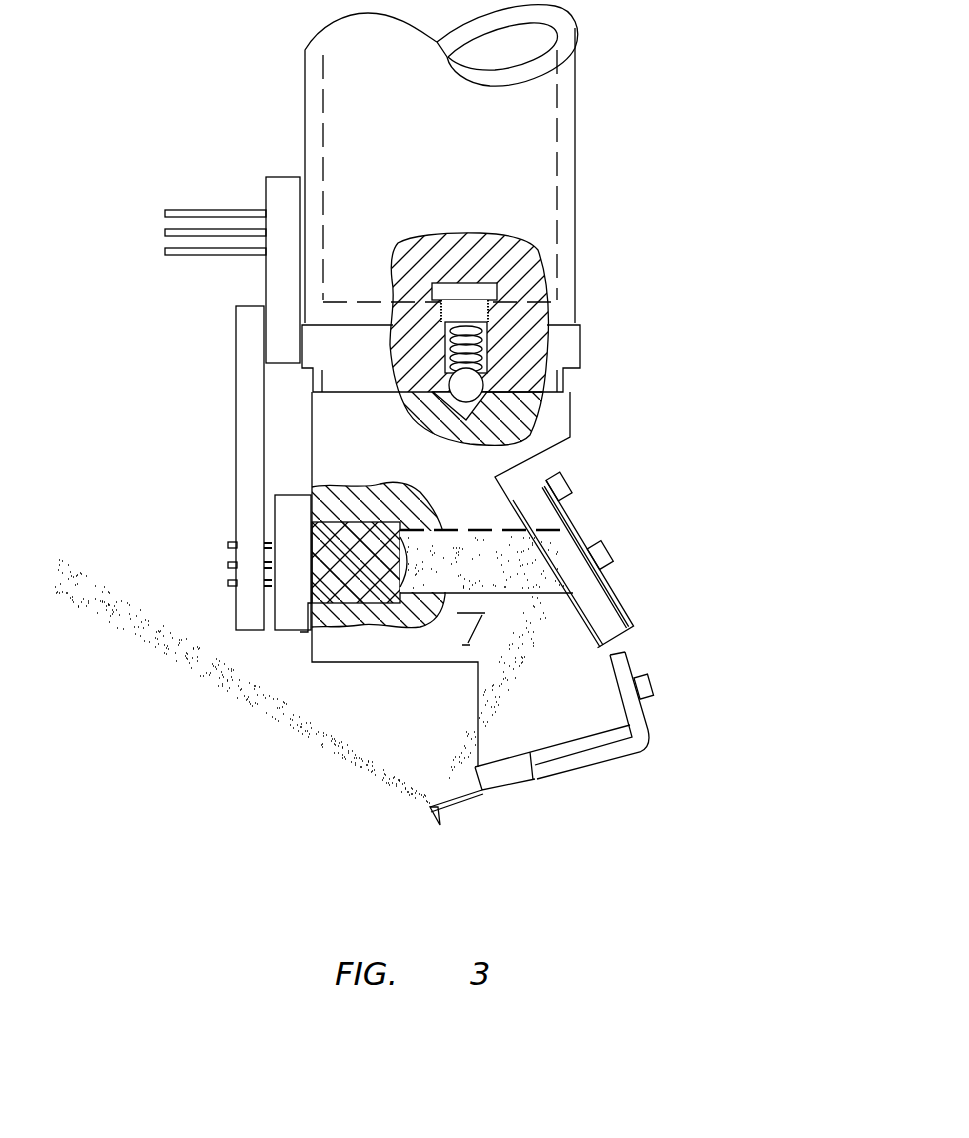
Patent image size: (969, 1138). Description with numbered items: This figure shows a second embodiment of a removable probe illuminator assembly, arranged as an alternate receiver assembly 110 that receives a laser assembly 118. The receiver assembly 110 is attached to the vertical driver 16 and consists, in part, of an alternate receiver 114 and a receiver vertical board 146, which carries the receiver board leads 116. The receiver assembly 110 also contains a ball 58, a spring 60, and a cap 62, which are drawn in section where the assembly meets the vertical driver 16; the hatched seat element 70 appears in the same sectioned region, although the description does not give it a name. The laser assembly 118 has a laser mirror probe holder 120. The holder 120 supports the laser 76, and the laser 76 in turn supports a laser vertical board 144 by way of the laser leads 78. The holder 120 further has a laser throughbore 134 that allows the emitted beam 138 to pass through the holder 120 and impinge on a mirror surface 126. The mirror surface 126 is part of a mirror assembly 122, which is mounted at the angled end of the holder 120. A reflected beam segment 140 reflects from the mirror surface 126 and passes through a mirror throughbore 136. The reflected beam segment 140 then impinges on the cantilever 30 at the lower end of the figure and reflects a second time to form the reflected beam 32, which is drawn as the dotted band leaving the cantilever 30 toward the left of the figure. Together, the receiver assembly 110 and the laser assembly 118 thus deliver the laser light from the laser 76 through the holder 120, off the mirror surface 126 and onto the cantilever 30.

The vertical driver 16 is at (578, 150).
The cantilever 30 is at (428, 806).
The reflected beam 32 is at (297, 712).
The ball 58 is at (483, 382).
The spring 60 is at (487, 348).
The cap 62 is at (497, 290).
The seat 70 is at (470, 407).
The laser 76 is at (288, 515).
The laser leads 78 is at (228, 583).
The alternate receiver assembly 110 is at (602, 320).
The alternate receiver 114 is at (582, 334).
The receiver board leads 116 is at (165, 251).
The laser assembly 118 is at (775, 503).
The laser mirror probe holder 120 is at (548, 452).
The mirror assembly 122 is at (637, 578).
The mirror surface 126 is at (616, 590).
The laser throughbore 134 is at (468, 615).
The mirror throughbore 136 is at (530, 700).
The emitted beam 138 is at (503, 562).
The reflected beam segment 140 is at (455, 763).
The laser vertical board 144 is at (236, 313).
The receiver vertical board 146 is at (266, 192).